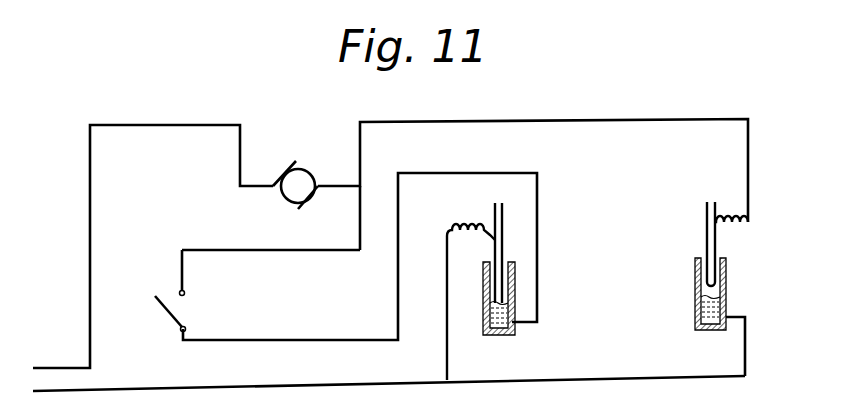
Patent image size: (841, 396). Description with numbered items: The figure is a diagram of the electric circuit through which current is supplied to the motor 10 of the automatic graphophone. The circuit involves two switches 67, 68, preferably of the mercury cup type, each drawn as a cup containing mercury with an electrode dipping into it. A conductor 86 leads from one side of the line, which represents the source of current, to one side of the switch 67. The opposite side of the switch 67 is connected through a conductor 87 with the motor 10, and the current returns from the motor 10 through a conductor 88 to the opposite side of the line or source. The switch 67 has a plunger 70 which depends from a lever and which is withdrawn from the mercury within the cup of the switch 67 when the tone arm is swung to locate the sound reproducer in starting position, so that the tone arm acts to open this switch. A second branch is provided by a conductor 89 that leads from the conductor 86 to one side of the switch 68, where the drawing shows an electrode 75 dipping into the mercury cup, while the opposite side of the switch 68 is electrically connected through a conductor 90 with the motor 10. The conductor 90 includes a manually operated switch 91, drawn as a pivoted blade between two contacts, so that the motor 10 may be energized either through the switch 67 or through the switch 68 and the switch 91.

The conductor 88 is at (172, 124).
The motor 10 is at (311, 170).
The conductor 87 is at (640, 118).
The conductor 90 is at (323, 248).
The manually operated switch 91 is at (186, 307).
The conductor 86 is at (313, 378).
The conductor 89 is at (447, 308).
The electrode 75 is at (501, 228).
The switch 68 is at (515, 333).
The plunger 70 is at (717, 243).
The switch 67 is at (705, 335).